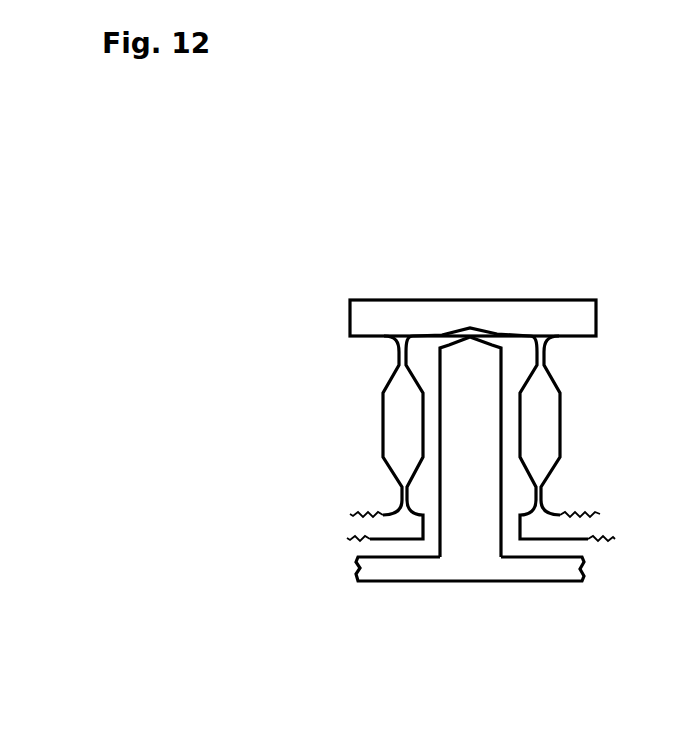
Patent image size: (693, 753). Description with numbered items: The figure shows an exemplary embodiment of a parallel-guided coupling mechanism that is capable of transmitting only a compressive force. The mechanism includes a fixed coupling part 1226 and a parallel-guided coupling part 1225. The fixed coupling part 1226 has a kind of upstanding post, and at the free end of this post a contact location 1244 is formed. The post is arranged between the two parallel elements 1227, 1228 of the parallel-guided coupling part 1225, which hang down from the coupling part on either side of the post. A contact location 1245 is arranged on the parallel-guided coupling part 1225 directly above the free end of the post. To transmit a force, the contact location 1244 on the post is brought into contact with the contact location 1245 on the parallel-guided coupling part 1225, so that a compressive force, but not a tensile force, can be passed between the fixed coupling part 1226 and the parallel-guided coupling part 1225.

The parallel-guided coupling part 1225 is at (314, 283).
The fixed coupling part 1226 is at (335, 591).
The parallel element 1227 is at (400, 425).
The parallel element 1228 is at (538, 417).
The contact location 1244 is at (456, 341).
The contact location 1245 is at (486, 333).